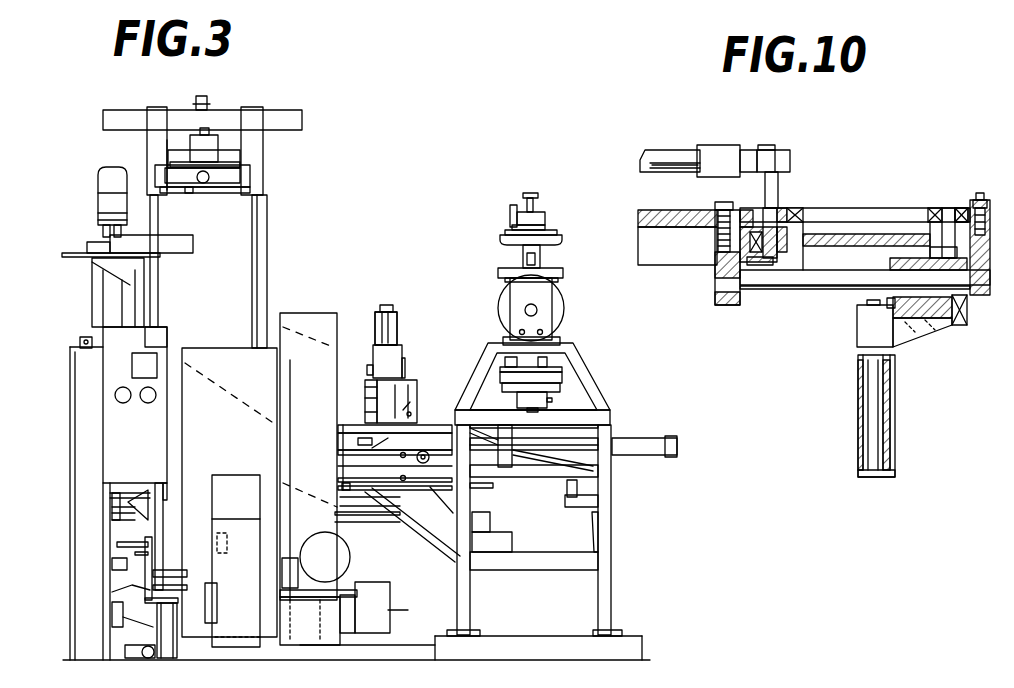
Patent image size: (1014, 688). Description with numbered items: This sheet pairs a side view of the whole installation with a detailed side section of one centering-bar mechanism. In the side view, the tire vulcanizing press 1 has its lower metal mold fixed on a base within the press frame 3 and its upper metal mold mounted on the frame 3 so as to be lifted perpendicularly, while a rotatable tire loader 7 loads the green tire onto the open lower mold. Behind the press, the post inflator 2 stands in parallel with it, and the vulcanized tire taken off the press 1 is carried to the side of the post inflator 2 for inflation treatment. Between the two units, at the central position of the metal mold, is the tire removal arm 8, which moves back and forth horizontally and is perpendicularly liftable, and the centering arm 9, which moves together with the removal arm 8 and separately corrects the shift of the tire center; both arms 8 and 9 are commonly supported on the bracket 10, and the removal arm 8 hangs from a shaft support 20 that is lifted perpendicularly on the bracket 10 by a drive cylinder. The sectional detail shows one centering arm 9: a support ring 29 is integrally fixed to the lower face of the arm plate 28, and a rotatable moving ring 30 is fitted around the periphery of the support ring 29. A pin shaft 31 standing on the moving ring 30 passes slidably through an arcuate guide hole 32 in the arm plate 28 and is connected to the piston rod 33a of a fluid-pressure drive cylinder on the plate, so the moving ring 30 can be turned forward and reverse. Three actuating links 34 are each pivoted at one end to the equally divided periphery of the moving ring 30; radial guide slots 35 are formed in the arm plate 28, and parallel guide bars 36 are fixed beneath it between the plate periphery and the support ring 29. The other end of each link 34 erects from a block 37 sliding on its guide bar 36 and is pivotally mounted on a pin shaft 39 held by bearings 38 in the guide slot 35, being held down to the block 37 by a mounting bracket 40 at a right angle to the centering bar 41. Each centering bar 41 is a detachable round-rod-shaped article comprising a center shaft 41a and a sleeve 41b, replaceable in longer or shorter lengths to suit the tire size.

In FIG. 3, the tire vulcanizing press 1 is at (269, 238).
In FIG. 3, the post inflator 2 is at (602, 380).
In FIG. 3, the press frame 3 is at (283, 113).
In FIG. 3, the tire loader 7 is at (76, 252).
In FIG. 3, the tire removal arm 8 is at (432, 447).
In FIG. 3, the centering arm 9 is at (372, 315).
In FIG. 3, the bracket 10 is at (398, 318).
In FIG. 3, the shaft support 20 is at (412, 448).
In FIG. 10, the arm plate 28 is at (670, 208).
In FIG. 10, the support ring 29 is at (677, 255).
In FIG. 10, the rotatable moving ring 30 is at (733, 146).
In FIG. 10, the pin shaft 31 is at (778, 187).
In FIG. 10, the arcuate guide hole 32 is at (795, 224).
In FIG. 10, the piston rod 33a is at (653, 170).
In FIG. 10, the actuating links 34 is at (840, 233).
In FIG. 10, the guide slots 35 is at (895, 208).
In FIG. 10, the guide bars 36 is at (793, 286).
In FIG. 10, the block 37 is at (968, 313).
In FIG. 10, the bearings 38 is at (960, 207).
In FIG. 10, the pin shafts 39 is at (988, 207).
In FIG. 10, the mounting bracket 40 is at (920, 333).
In FIG. 10, the centering bar 41 is at (893, 413).
In FIG. 10, the center shaft 41a is at (873, 400).
In FIG. 10, the sleeve 41b is at (868, 443).